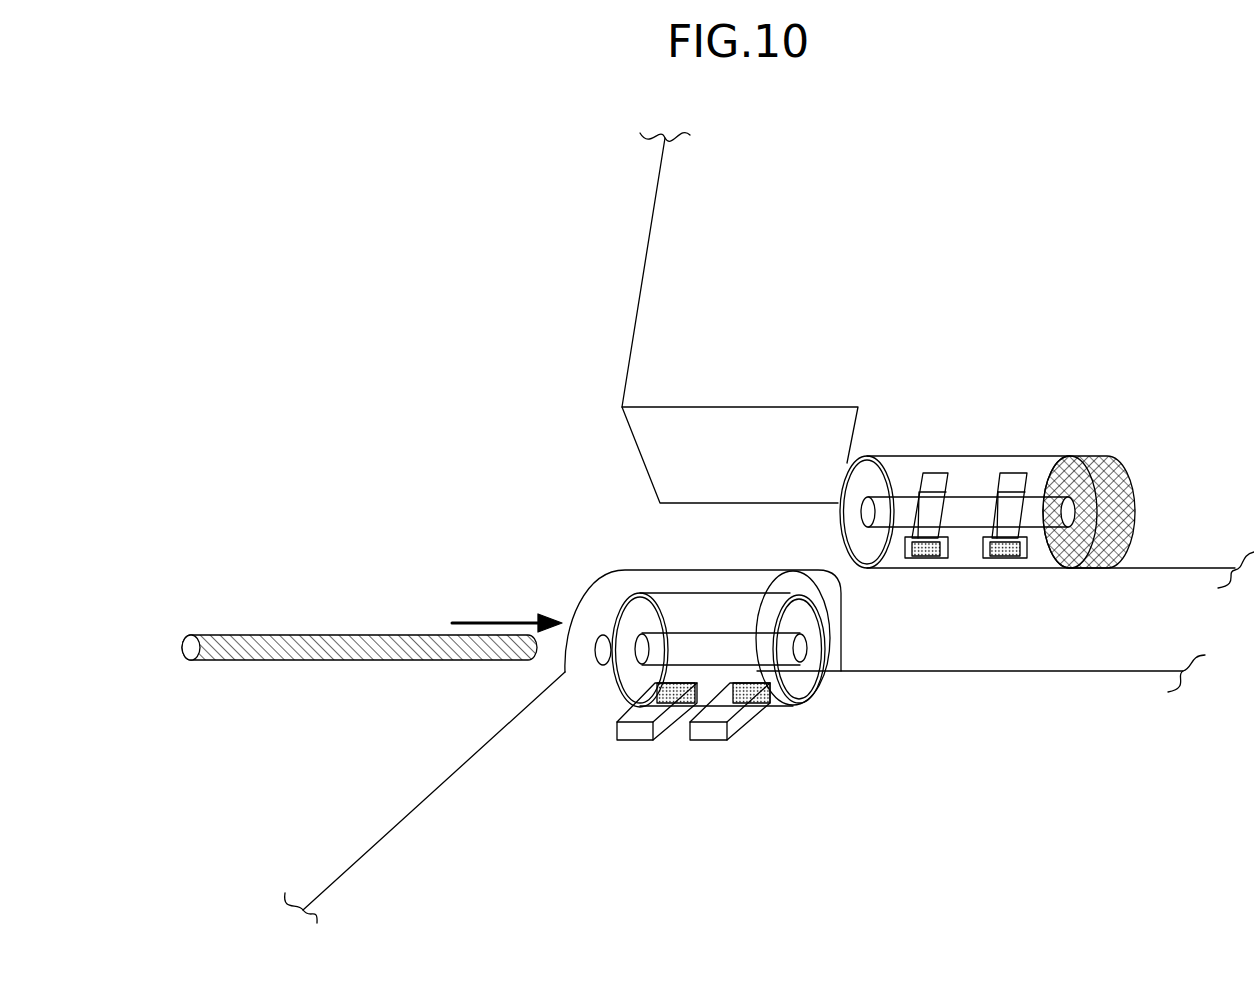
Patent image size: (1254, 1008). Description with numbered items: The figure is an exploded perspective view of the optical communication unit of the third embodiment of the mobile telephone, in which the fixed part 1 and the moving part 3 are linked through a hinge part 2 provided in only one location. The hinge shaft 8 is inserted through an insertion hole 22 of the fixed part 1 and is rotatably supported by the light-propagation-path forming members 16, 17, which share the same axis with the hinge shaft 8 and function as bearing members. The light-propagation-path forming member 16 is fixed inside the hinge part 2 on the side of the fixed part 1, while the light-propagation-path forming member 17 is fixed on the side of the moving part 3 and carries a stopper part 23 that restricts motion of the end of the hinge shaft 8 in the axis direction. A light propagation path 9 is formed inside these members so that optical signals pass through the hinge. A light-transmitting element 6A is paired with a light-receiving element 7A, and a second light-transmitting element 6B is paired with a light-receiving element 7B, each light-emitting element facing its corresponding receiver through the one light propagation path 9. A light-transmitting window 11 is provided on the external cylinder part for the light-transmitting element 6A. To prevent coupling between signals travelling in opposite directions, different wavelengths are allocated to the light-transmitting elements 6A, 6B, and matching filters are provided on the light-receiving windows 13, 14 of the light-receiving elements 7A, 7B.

The fixed part 1 is at (418, 822).
The hinge part 2 is at (598, 524).
The moving part 3 is at (668, 283).
The light-transmitting element 6A is at (707, 745).
The light-transmitting element 6B is at (1013, 480).
The light-receiving element 7A is at (937, 480).
The light-receiving element 7B is at (632, 745).
The hinge shaft 8 is at (323, 633).
The light propagation path 9 is at (798, 620).
The light-transmitting window 11 is at (767, 705).
The light-receiving window 13 is at (930, 552).
The light-receiving window 14 is at (655, 683).
The light-propagation-path forming member 16 is at (727, 612).
The light-propagation-path forming member 17 is at (902, 473).
The insertion hole 22 is at (603, 633).
The stopper part 23 is at (1123, 463).